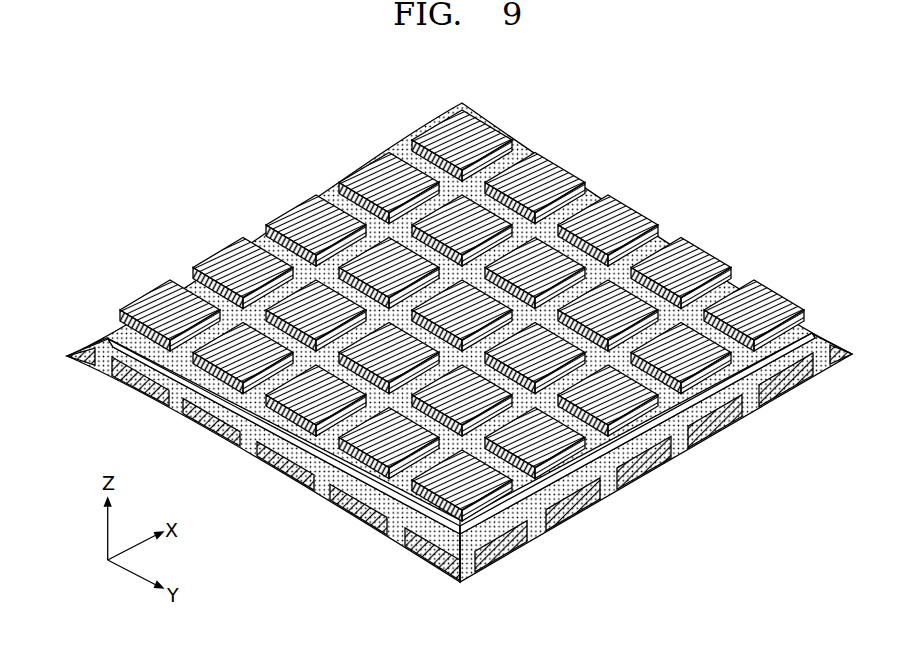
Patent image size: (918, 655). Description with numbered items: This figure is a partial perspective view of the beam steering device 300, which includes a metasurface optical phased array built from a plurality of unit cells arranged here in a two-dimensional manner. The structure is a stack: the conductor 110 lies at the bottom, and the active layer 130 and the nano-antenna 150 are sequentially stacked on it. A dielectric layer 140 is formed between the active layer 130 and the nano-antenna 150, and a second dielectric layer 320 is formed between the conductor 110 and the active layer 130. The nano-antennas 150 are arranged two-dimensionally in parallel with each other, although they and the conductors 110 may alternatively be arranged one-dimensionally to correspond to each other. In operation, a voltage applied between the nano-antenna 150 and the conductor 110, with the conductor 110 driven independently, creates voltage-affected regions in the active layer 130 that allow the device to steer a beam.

The beam steering device 300 is at (459, 342).
The nano-antenna 150 is at (677, 258).
The dielectric layer 140 is at (697, 393).
The active layer 130 is at (667, 423).
The second dielectric layer 320 is at (630, 477).
The conductor 110 is at (459, 458).